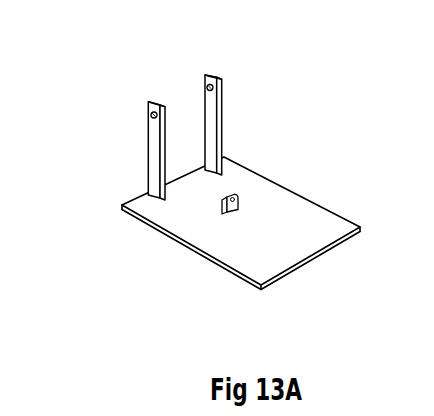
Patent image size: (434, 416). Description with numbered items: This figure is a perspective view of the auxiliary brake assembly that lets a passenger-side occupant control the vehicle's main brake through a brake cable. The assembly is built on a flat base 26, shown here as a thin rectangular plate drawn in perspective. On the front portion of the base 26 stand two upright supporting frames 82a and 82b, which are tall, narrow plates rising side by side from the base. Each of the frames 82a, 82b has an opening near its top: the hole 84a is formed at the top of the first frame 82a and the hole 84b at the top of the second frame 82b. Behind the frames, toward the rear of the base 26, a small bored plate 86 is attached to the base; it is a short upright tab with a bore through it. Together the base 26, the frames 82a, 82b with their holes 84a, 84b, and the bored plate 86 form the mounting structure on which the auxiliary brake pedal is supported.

The base 26 is at (297, 220).
The supporting frame 82a is at (157, 168).
The supporting frame 82b is at (212, 119).
The hole 84a is at (153, 115).
The hole 84b is at (211, 76).
The bored plate 86 is at (222, 211).